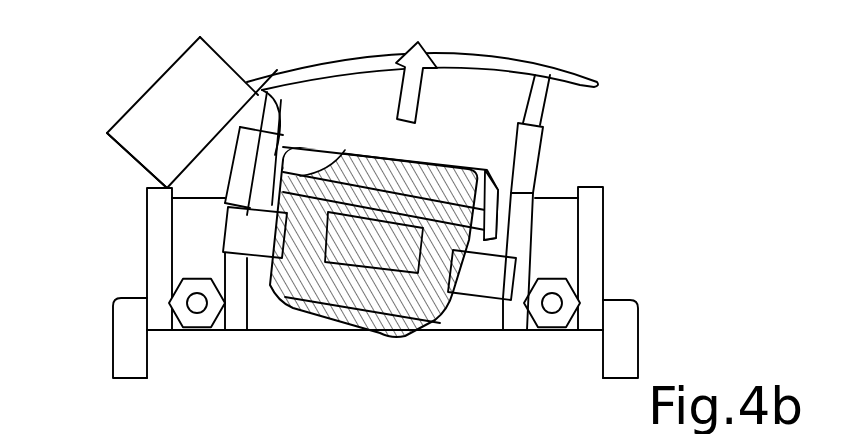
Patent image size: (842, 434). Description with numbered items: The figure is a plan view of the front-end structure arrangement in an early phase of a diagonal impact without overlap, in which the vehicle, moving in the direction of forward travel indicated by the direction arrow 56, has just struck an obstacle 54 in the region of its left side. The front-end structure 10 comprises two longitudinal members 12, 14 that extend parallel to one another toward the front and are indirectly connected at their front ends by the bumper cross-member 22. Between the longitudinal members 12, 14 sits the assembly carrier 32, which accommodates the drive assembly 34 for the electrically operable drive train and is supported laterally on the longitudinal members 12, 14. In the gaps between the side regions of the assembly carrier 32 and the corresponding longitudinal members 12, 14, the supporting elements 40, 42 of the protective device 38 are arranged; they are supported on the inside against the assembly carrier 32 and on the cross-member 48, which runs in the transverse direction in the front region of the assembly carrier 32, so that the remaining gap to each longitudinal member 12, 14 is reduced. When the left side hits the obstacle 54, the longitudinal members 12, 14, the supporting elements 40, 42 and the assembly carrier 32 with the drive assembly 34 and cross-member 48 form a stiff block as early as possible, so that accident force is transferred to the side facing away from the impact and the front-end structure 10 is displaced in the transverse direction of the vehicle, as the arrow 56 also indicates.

The front-end structure 10 is at (644, 68).
The longitudinal member 12 is at (240, 150).
The longitudinal member 14 is at (540, 138).
The cross-member 22 is at (384, 60).
The assembly carrier 32 is at (463, 307).
The drive assembly 34 is at (322, 318).
The protective device 38 is at (496, 116).
The supporting element 40 is at (243, 125).
The supporting element 42 is at (540, 190).
The cross-member 48 is at (336, 172).
The obstacle 54 is at (133, 168).
The direction arrow 56 is at (414, 92).